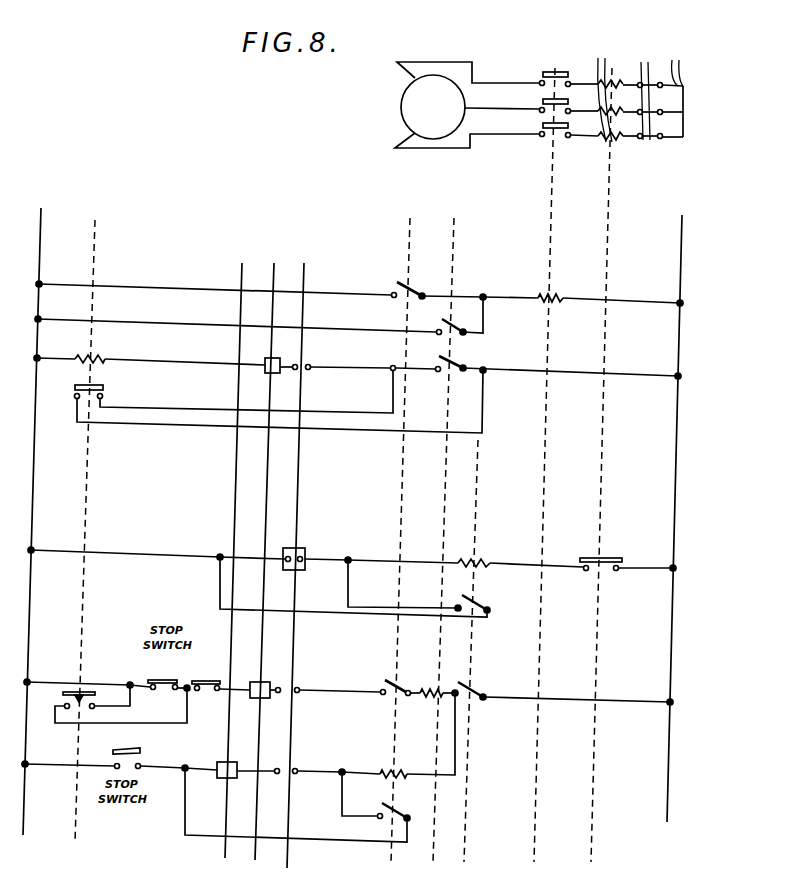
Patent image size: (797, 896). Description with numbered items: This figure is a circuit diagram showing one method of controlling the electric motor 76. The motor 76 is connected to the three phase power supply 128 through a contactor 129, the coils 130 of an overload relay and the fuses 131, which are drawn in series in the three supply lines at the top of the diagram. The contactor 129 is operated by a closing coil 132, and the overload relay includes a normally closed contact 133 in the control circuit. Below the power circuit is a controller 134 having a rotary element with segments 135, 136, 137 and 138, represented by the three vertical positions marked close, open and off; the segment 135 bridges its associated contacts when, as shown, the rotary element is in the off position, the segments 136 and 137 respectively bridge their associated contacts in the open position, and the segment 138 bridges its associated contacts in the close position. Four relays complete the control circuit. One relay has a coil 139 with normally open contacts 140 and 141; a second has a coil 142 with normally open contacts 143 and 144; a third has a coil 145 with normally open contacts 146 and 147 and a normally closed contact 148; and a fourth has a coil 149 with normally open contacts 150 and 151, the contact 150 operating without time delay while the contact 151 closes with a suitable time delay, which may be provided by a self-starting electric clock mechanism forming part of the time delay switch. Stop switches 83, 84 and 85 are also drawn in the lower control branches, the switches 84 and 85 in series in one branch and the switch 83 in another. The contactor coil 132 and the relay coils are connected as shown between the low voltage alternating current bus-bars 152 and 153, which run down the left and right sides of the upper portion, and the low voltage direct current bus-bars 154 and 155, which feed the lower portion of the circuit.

The electric motor 76 is at (417, 105).
The three phase power supply 128 is at (666, 88).
The contactor 129 is at (552, 450).
The coils of overload relay 130 is at (597, 448).
The fuses 131 is at (640, 89).
The closing coil 132 is at (551, 298).
The normally closed contact 133 is at (608, 561).
The controller 134 is at (318, 236).
The segment 135 is at (300, 552).
The segment 136 is at (282, 365).
The segment 137 is at (270, 686).
The segment 138 is at (224, 762).
The relay coil 139 is at (476, 564).
The normally open contact 140 is at (477, 605).
The normally open contact 141 is at (564, 689).
The relay coil 142 is at (430, 690).
The normally open contact 143 is at (460, 316).
The normally open contact 144 is at (535, 362).
The relay coil 145 is at (392, 773).
The normally open contact 146 is at (406, 287).
The normally open contact 147 is at (392, 810).
The normally closed contact 148 is at (394, 689).
The relay coil 149 is at (95, 360).
The normally open contact 150 is at (103, 388).
The normally open time delay contact 151 is at (65, 692).
The low voltage alternating bus-bar 152 is at (41, 263).
The low voltage alternating bus-bar 153 is at (681, 232).
The low voltage direct current bus-bar 154 is at (52, 517).
The low voltage direct current bus-bar 155 is at (674, 522).
The stop switch 83 is at (140, 756).
The stop switch 84 is at (180, 652).
The stop switch 85 is at (182, 652).